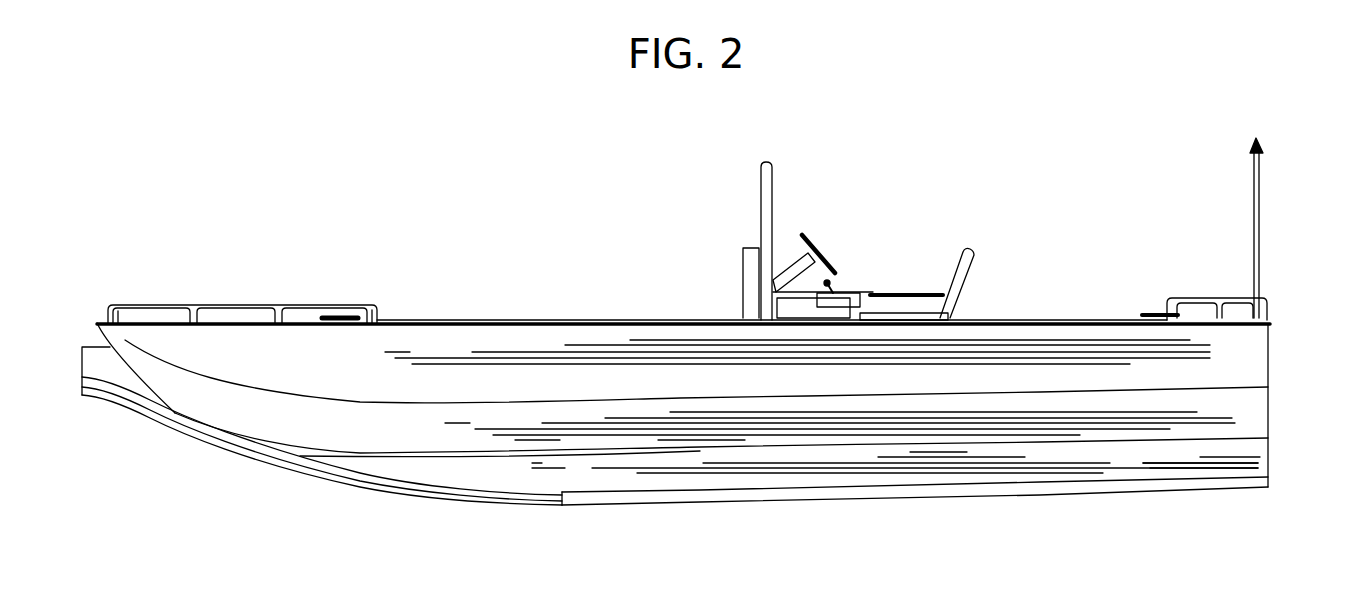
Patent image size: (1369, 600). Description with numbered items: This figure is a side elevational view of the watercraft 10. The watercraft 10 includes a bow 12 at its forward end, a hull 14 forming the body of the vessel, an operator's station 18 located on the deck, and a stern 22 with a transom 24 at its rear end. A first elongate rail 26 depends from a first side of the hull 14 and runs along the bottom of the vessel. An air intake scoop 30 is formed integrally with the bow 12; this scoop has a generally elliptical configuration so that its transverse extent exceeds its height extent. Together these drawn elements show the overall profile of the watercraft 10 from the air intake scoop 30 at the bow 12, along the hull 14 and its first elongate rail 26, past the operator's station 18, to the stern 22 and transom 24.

The watercraft 10 is at (455, 181).
The bow 12 is at (190, 416).
The hull 14 is at (446, 496).
The operator's station 18 is at (744, 198).
The stern 22 is at (1188, 454).
The transom 24 is at (1270, 413).
The first elongate rail 26 is at (877, 497).
The air intake scoop 30 is at (83, 345).